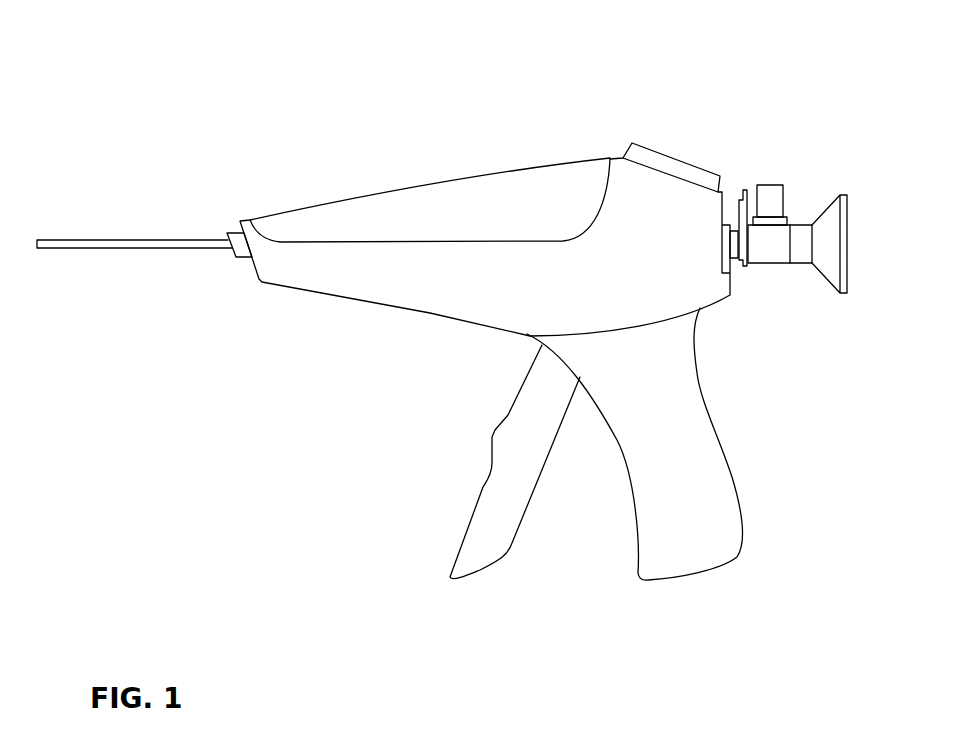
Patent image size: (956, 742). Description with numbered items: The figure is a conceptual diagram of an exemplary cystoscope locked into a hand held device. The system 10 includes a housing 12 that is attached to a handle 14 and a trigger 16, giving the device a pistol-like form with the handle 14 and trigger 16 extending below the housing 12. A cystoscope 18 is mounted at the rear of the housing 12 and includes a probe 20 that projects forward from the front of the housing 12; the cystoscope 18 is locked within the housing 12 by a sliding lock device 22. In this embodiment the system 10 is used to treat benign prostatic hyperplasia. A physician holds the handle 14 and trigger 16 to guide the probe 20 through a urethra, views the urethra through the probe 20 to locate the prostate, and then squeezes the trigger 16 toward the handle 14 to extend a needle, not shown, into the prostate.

The system 10 is at (318, 93).
The housing 12 is at (402, 198).
The handle 14 is at (648, 517).
The trigger 16 is at (493, 470).
The cystoscope 18 is at (805, 260).
The probe 20 is at (102, 247).
The sliding lock device 22 is at (743, 267).